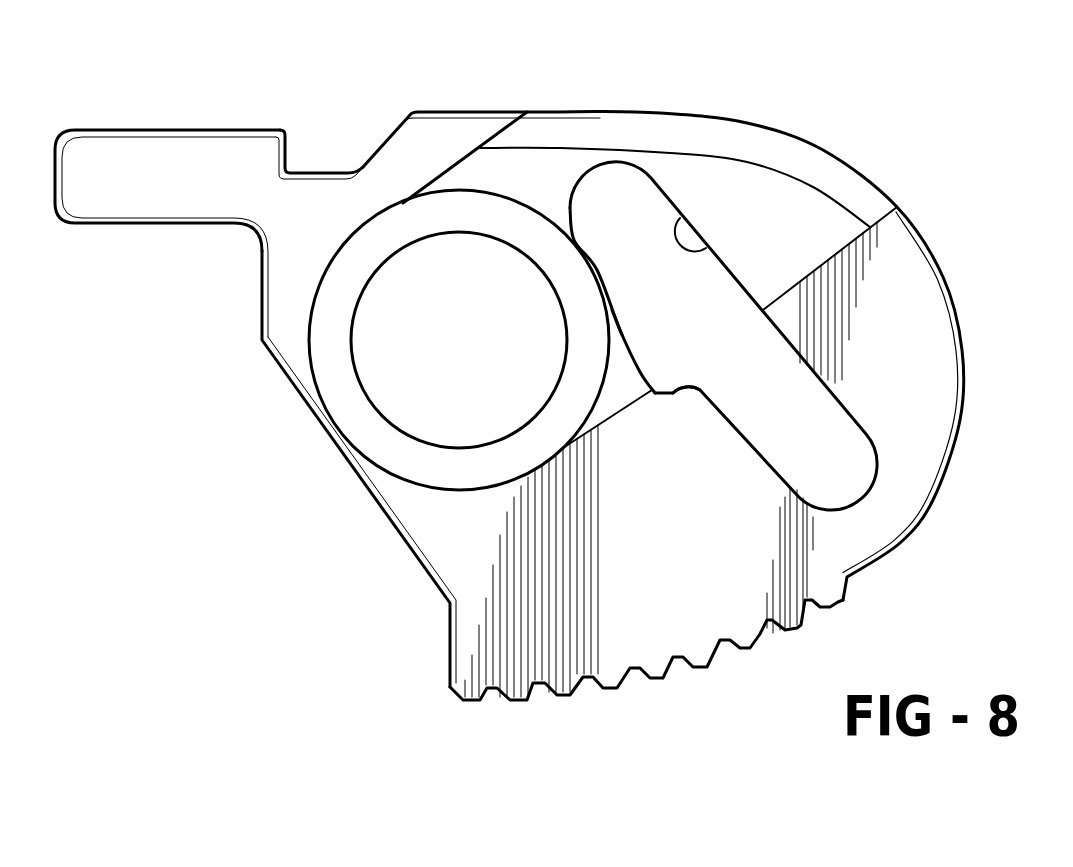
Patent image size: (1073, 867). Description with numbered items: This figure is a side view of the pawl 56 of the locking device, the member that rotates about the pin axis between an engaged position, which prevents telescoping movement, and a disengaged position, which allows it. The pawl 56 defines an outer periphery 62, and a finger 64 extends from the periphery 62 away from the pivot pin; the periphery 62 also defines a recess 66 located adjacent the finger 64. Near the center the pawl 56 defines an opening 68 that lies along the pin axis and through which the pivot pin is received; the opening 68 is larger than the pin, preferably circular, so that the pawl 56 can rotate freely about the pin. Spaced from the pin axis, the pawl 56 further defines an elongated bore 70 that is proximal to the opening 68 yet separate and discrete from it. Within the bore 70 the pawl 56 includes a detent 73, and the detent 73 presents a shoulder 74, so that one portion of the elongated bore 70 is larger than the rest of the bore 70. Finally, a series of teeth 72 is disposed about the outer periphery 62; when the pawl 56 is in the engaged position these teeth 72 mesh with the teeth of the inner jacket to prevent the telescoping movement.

The pawl 56 is at (902, 168).
The outer periphery 62 is at (947, 278).
The finger 64 is at (147, 187).
The recess 66 is at (313, 170).
The opening 68 is at (413, 247).
The elongated bore 70 is at (710, 247).
The series of teeth 72 is at (703, 663).
The detent 73 is at (623, 330).
The shoulder 74 is at (672, 390).